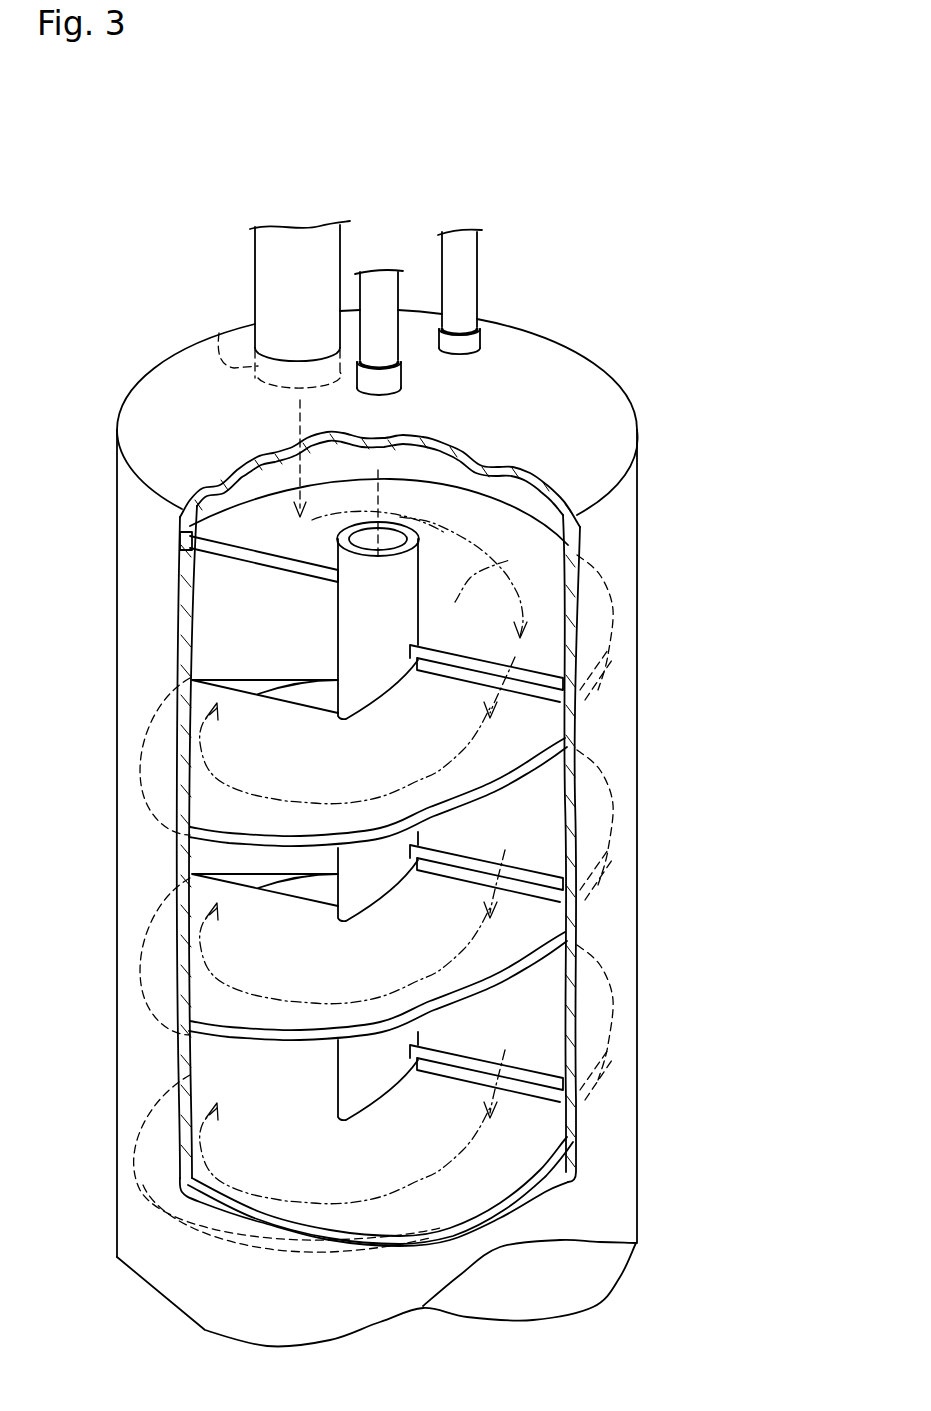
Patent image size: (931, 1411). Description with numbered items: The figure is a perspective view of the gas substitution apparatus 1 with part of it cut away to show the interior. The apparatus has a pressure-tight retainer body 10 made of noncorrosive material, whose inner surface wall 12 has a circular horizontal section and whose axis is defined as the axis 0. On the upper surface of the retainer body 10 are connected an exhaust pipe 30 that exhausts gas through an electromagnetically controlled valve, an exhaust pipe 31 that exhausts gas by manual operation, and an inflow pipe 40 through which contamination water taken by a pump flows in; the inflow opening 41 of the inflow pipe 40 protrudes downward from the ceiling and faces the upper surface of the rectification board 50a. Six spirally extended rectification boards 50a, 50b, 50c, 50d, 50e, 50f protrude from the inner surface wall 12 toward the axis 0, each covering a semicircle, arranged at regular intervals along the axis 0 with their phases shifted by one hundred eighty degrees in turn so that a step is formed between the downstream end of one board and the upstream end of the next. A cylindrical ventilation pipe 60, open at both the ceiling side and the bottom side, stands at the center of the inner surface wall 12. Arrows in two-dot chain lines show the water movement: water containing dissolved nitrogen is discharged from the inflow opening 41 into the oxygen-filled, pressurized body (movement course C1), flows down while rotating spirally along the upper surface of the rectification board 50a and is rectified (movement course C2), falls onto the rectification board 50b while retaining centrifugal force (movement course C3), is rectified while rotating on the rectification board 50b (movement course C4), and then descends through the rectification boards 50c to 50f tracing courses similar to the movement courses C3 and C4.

The gas substitution apparatus 1 is at (88, 286).
The retainer body 10 is at (185, 337).
The inner surface wall 12 is at (573, 612).
The exhaust pipe 30 is at (388, 256).
The exhaust pipe 31 is at (480, 218).
The inflow pipe 40 is at (305, 218).
The inflow opening 41 is at (220, 333).
The ventilation pipe 60 is at (352, 637).
The rectification board 50a is at (292, 551).
The rectification board 50b is at (360, 822).
The rectification board 50c is at (545, 815).
The rectification board 50d is at (365, 1018).
The rectification board 50e is at (545, 1007).
The rectification board 50f is at (403, 1214).
The axis 0 is at (382, 467).
The movement course C1 is at (300, 486).
The movement course C2 is at (419, 574).
The movement course C3 is at (505, 1092).
The movement course C4 is at (347, 1203).